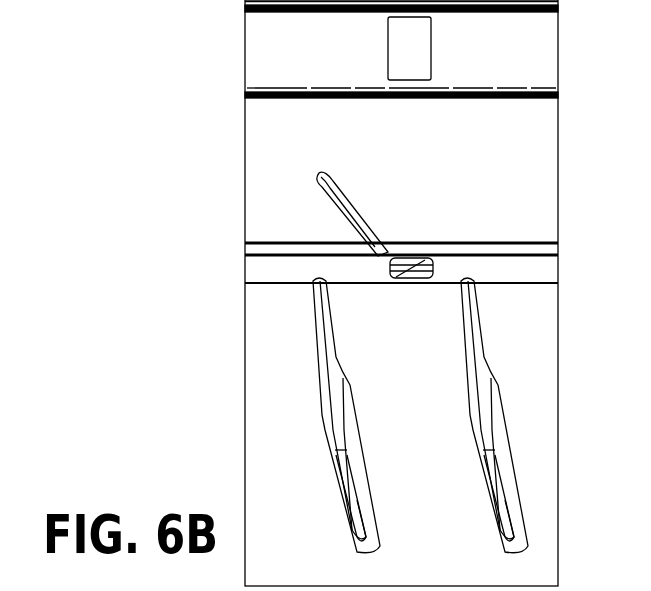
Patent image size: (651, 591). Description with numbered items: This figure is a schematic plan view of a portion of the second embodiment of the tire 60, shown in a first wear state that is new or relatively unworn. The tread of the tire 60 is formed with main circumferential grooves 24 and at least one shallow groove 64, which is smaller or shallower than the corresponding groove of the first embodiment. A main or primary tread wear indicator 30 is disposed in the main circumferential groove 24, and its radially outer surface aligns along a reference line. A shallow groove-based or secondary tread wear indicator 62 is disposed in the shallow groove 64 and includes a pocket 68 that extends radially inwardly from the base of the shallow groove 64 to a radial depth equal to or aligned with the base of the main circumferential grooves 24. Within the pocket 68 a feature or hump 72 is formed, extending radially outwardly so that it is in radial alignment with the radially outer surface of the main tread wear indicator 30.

The main circumferential groove 24 is at (278, 77).
The main tread wear indicator 30 is at (407, 47).
The tire 60 is at (228, 151).
The shallow groove-based tread wear indicator 62 is at (433, 275).
The shallow groove 64 is at (283, 268).
The pocket 68 is at (390, 268).
The hump 72 is at (396, 277).